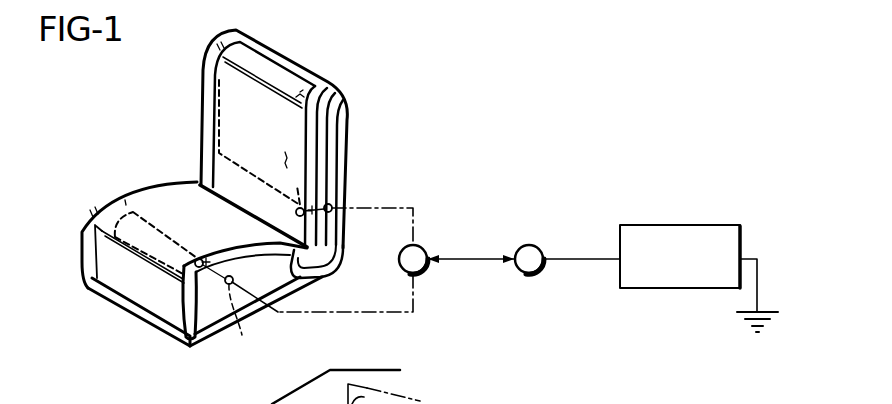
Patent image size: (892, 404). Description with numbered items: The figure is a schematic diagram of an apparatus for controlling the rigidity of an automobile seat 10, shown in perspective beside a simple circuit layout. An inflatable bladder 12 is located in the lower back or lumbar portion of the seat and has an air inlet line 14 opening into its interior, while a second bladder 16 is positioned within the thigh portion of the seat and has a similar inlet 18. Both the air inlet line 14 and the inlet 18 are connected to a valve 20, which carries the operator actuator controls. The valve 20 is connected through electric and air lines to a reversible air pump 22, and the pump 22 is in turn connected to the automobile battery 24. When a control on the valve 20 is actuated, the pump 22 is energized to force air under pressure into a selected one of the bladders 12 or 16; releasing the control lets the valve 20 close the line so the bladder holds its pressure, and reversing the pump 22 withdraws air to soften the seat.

The automobile seat 10 is at (150, 150).
The inflatable bladder 12 is at (253, 156).
The air inlet line 14 is at (364, 183).
The second bladder 16 is at (161, 219).
The inlet 18 is at (243, 333).
The valve 20 is at (420, 247).
The reversible air pump 22 is at (538, 246).
The automobile battery 24 is at (675, 226).